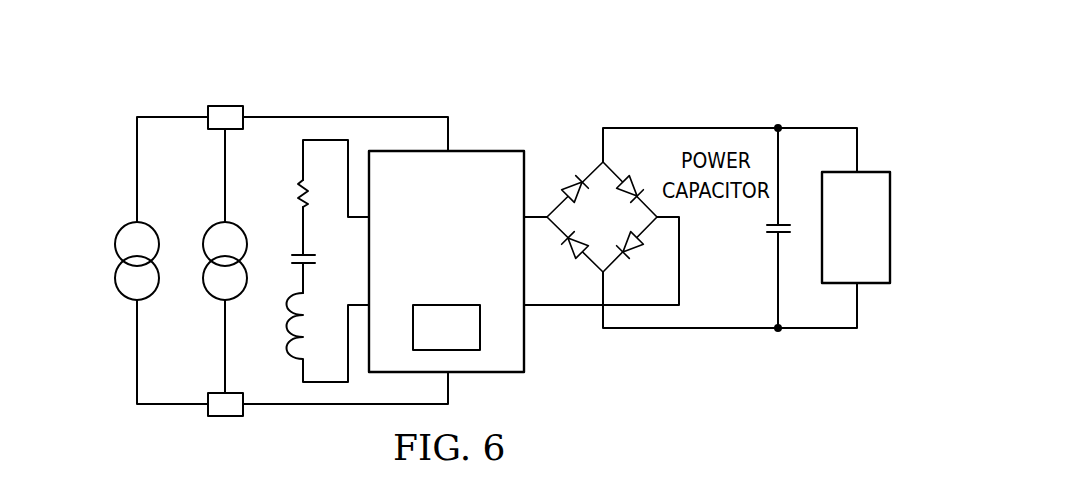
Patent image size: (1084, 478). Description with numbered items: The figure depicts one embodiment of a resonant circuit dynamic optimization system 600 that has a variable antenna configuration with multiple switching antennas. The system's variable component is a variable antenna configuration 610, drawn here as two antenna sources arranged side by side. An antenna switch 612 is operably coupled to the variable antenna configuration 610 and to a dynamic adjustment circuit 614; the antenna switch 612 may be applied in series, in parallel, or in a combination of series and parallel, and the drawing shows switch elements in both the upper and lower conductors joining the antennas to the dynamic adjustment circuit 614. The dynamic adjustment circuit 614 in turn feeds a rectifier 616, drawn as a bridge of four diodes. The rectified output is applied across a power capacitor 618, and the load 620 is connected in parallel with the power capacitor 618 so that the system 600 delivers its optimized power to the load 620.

The resonant circuit dynamic optimization system 600 is at (748, 80).
The variable antenna configuration 610 is at (113, 244).
The antenna switch 612 is at (222, 105).
The dynamic adjustment circuit 614 is at (478, 150).
The rectifier 616 is at (588, 162).
The power capacitor 618 is at (765, 228).
The load 620 is at (892, 230).